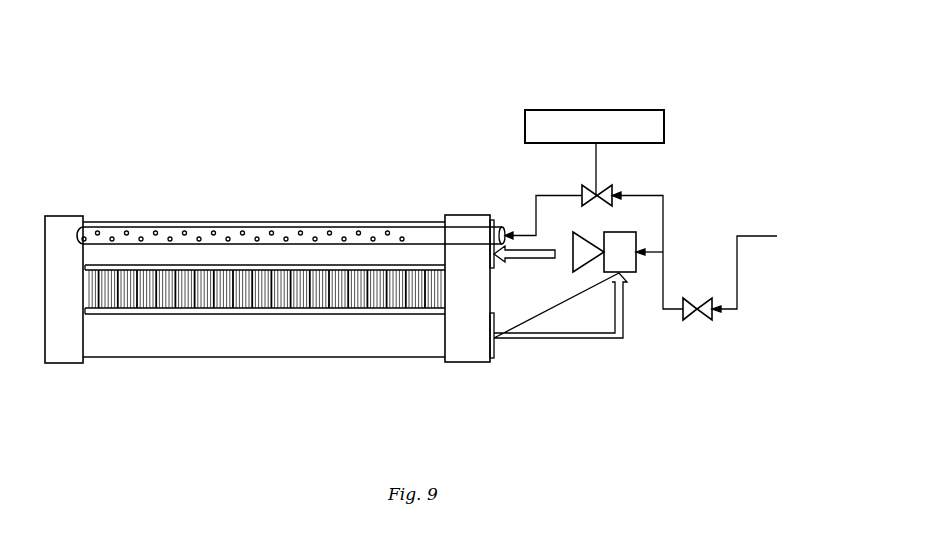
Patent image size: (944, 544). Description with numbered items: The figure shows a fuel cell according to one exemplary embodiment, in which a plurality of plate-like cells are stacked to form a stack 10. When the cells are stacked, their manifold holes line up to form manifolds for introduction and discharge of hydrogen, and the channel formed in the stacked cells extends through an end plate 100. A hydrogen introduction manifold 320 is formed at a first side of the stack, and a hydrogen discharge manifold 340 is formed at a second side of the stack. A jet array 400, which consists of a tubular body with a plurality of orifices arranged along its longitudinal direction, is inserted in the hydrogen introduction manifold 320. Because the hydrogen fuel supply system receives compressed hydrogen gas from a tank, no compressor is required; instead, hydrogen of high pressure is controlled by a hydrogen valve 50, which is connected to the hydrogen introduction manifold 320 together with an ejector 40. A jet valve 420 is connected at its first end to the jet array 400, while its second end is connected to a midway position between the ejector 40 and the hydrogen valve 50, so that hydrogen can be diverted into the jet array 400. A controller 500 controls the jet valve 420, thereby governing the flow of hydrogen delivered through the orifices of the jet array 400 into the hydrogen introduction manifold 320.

The brush 10 is at (132, 298).
The ejector 40 is at (637, 237).
The hydrogen valve 50 is at (698, 320).
The end plate 100 is at (466, 340).
The hydrogen introduction manifold 320 is at (187, 222).
The hydrogen discharge manifold 340 is at (298, 340).
The jet array 400 is at (426, 232).
The jet valve 420 is at (614, 190).
The controller 500 is at (597, 108).